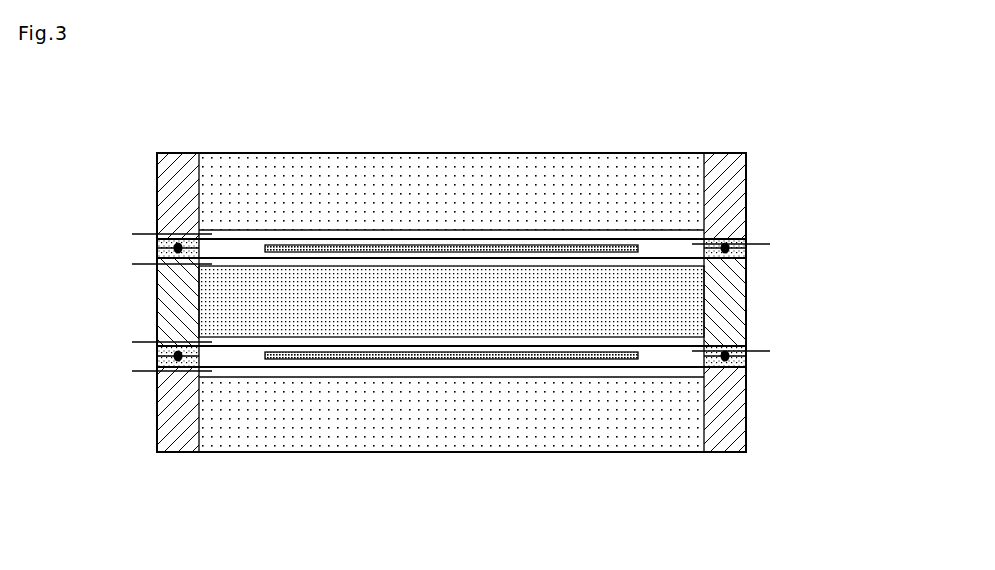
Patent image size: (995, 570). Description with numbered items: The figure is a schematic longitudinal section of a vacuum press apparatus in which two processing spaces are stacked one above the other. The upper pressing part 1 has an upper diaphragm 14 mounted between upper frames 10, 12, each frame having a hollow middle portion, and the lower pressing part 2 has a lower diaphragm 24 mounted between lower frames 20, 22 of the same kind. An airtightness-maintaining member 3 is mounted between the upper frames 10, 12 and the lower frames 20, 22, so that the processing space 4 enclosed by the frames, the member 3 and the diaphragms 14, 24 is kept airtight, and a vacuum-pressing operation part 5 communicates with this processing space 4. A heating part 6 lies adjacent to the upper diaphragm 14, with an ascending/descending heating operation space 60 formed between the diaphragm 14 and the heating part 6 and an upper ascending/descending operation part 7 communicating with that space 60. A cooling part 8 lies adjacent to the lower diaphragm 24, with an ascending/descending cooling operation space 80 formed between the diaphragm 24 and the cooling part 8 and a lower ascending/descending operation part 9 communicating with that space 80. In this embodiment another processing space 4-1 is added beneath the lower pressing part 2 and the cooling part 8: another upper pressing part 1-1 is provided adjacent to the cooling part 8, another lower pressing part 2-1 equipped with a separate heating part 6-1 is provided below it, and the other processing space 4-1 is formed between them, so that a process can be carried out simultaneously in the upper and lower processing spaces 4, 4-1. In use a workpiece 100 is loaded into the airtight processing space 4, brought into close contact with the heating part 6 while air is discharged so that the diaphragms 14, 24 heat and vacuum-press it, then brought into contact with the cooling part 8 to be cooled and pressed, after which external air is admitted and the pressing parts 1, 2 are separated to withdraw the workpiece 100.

The upper pressing part 1 is at (818, 105).
The other upper pressing part 1-1 is at (85, 268).
The lower pressing part 2 is at (818, 300).
The other lower pressing part 2-1 is at (85, 420).
The airtightness-maintaining member 3 is at (183, 243).
The processing space 4 is at (243, 247).
The other processing space 4-1 is at (243, 358).
The vacuum-pressing operation part 5 is at (767, 238).
The heating part 6 is at (521, 170).
The separate heating part 6-1 is at (523, 440).
The upper ascending/descending operation part 7 is at (146, 234).
The cooling part 8 is at (366, 350).
The lower ascending/descending operation part 9 is at (146, 264).
The upper frame 10 is at (730, 185).
The upper frame 12 is at (747, 238).
The upper diaphragm 14 is at (682, 200).
The lower frame 20 is at (733, 313).
The lower frame 22 is at (745, 253).
The lower diaphragm 24 is at (746, 332).
The ascending/descending heating operation space 60 is at (305, 232).
The ascending/descending cooling operation space 80 is at (372, 268).
The workpiece 100 is at (578, 243).